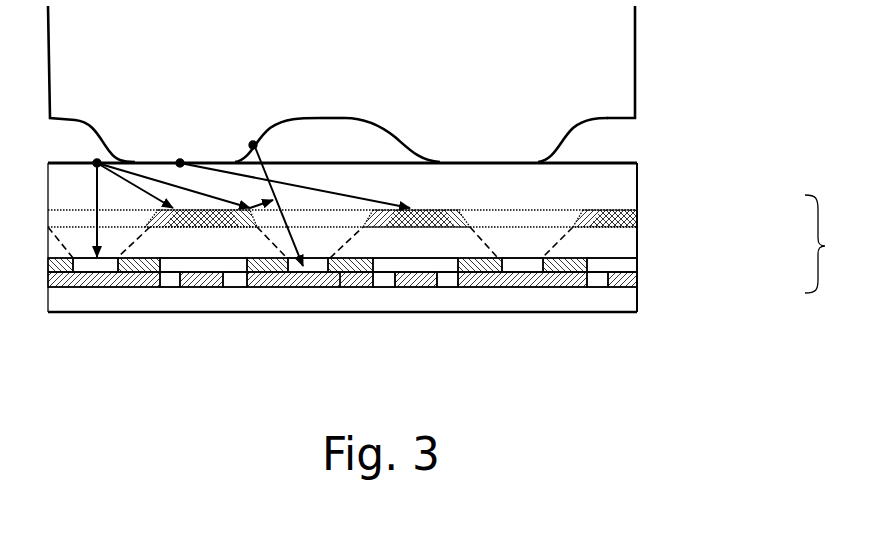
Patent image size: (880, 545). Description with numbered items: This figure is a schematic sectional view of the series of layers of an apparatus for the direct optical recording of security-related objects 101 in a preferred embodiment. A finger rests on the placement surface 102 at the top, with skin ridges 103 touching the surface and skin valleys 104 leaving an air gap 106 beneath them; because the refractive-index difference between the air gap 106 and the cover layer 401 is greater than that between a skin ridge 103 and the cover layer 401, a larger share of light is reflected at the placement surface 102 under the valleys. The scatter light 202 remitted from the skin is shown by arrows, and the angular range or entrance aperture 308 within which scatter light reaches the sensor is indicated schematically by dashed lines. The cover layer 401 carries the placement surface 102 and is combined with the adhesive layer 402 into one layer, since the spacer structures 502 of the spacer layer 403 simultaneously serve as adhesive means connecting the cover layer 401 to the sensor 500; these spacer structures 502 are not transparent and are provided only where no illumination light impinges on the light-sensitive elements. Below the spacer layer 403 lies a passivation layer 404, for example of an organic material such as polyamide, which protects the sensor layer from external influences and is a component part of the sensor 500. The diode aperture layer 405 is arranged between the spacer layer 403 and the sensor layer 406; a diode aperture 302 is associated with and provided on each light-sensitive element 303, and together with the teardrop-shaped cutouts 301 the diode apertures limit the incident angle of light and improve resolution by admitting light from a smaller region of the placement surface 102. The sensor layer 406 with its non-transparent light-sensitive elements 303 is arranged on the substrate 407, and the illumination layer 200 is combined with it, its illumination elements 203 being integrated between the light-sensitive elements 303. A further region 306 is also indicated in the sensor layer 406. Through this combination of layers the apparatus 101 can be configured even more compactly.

The apparatus for the direct optical recording of security-related objects 101 is at (620, 88).
The placement surface 102 is at (633, 158).
The skin ridge 103 is at (483, 160).
The skin valley 104 is at (330, 112).
The air gap 106 is at (325, 138).
The scatter light 202 is at (251, 142).
The entrance aperture 308 is at (55, 228).
The cover layer 401 is at (615, 188).
The adhesive layer 402 is at (688, 194).
The spacer layer 403 is at (615, 217).
The passivation layer 404 is at (615, 245).
The diode aperture layer 405 is at (615, 265).
The sensor layer 406 is at (615, 283).
The illumination layer 200 is at (630, 283).
The substrate 407 is at (615, 300).
The sensor 500 is at (840, 244).
The illumination element 203 is at (163, 286).
The cutout 301 is at (523, 217).
The diode aperture 302 is at (245, 267).
The light-sensitive element 303 is at (300, 288).
The conductor section 306 is at (350, 286).
The spacer structure 502 is at (418, 220).